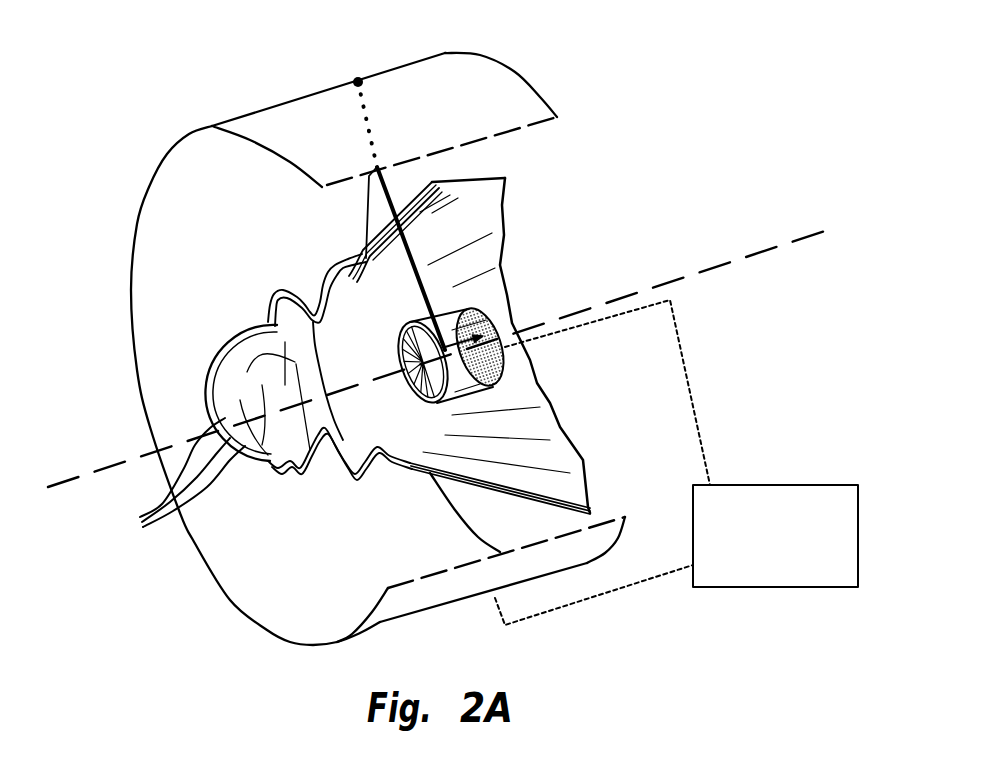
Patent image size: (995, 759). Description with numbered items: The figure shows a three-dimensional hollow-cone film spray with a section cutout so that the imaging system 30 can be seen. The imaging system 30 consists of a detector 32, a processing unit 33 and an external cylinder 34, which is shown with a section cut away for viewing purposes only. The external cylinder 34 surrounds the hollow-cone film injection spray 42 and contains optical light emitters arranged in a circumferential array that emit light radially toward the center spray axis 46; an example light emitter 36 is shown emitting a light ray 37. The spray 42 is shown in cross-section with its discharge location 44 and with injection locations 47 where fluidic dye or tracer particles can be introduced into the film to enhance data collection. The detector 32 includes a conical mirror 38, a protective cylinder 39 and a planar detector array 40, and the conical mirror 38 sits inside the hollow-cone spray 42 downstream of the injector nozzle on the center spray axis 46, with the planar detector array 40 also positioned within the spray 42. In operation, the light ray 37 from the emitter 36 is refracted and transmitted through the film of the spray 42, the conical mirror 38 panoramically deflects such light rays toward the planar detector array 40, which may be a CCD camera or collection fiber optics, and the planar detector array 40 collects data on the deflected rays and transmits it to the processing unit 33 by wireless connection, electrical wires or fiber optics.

The imaging system 30 is at (670, 116).
The detector 32 is at (497, 300).
The processing unit 33 is at (740, 588).
The external cylinder 34 is at (263, 125).
The light emitter 36 is at (358, 80).
The light ray 37 is at (390, 190).
The conical mirror 38 is at (415, 387).
The protective cylinder 39 is at (483, 400).
The planar detector array 40 is at (505, 367).
The hollow-cone film injection spray 42 is at (228, 268).
The discharge location 44 is at (210, 398).
The center spray axis 46 is at (760, 250).
The injection locations 47 is at (143, 523).